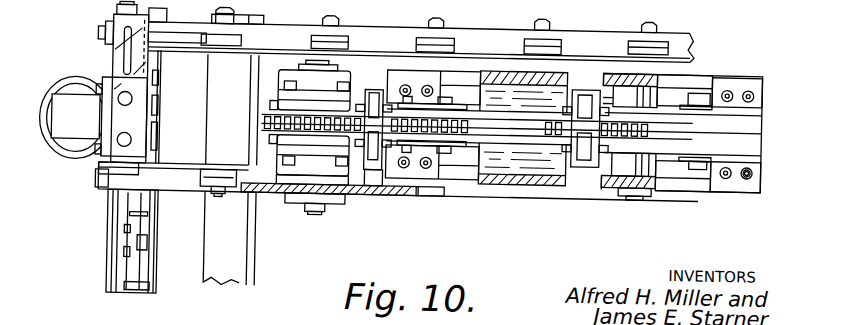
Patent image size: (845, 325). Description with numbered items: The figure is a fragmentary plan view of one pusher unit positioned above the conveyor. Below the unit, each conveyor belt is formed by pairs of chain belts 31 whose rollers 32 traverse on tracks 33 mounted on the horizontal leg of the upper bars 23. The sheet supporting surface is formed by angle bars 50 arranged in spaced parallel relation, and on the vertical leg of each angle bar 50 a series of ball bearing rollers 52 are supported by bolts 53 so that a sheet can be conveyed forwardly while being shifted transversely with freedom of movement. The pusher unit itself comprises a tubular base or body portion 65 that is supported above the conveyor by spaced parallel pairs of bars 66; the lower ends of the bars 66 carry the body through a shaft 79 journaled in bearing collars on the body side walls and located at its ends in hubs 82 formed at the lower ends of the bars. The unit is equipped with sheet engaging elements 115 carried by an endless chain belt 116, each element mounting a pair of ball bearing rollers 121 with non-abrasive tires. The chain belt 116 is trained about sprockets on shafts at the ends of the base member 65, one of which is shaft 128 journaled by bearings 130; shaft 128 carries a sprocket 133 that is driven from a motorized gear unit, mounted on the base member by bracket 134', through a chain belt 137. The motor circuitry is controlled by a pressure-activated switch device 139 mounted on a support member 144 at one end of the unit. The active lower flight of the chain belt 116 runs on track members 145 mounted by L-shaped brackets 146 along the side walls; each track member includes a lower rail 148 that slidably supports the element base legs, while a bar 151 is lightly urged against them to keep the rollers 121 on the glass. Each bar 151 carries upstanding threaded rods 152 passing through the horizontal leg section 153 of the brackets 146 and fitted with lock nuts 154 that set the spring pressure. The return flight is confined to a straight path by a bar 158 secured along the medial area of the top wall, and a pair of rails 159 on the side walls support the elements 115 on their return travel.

The upper bar 23 is at (113, 219).
The chain belt 31 is at (140, 222).
The roller 32 is at (127, 250).
The track 33 is at (155, 258).
The angle bar 50 is at (363, 38).
The ball bearing roller 52 is at (522, 35).
The bolt 53 is at (546, 16).
The tubular base or body portion 65 is at (510, 162).
The bar 66 is at (613, 62).
The shaft 79 is at (628, 190).
The hub 82 is at (625, 83).
The sheet engaging element 115 is at (375, 190).
The endless chain belt 116 is at (262, 121).
The ball bearing roller 121 is at (380, 78).
The shaft 128 is at (327, 211).
The bearing 130 is at (315, 86).
The sprocket 133 is at (278, 194).
The bracket 134' is at (521, 206).
The chain belt 137 is at (428, 190).
The pressure-activated switch device 139 is at (72, 147).
The support member 144 is at (122, 61).
The track member 145 is at (458, 68).
The L-shaped bracket 146 is at (738, 71).
The lower bar or rail 148 is at (695, 74).
The bar 151 is at (660, 157).
The threaded rod 152 is at (752, 80).
The horizontal leg section 153 is at (758, 159).
The lock nut 154 is at (760, 84).
The bar 158 is at (743, 120).
The rail 159 is at (743, 100).